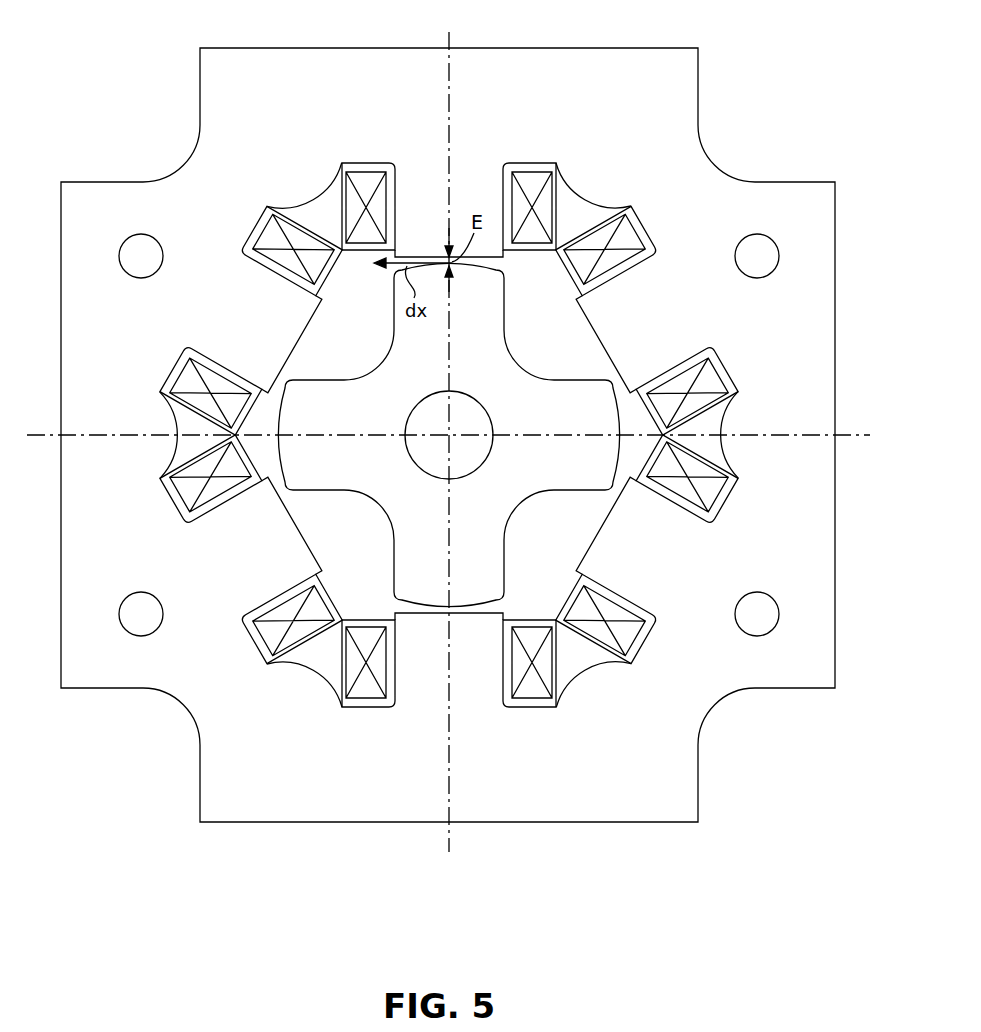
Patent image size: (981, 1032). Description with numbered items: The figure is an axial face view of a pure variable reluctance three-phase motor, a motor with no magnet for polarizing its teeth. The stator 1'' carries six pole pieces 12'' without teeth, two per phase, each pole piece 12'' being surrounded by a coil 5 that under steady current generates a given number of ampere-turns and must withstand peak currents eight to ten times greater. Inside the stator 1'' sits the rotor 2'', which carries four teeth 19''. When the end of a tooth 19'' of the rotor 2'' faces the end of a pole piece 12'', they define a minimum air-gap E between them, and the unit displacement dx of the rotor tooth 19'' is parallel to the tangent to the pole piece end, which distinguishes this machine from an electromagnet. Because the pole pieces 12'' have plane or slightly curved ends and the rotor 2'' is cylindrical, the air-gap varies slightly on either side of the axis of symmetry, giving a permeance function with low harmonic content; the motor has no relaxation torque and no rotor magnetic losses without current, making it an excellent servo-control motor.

The stator 1'' is at (465, 435).
The rotor 2'' is at (448, 434).
The coil 5 is at (620, 242).
The pole piece 12'' is at (508, 434).
The tooth 19'' is at (677, 624).